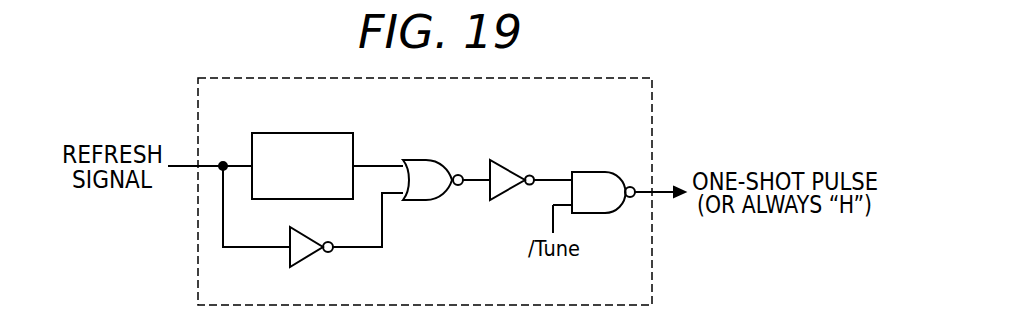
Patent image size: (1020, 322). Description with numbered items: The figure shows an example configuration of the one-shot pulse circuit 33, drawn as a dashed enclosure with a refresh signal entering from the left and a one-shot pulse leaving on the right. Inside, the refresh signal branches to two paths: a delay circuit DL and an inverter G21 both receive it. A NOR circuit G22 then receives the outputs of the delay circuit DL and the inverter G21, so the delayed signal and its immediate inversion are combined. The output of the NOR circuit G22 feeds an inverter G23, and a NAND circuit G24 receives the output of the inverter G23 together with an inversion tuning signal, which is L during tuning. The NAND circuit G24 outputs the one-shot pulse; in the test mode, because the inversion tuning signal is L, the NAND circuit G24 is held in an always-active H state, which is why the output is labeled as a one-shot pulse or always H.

The one-shot pulse circuit 33 is at (607, 78).
The delay circuit DL is at (311, 133).
The inverter G21 is at (306, 258).
The NOR circuit G22 is at (427, 160).
The inverter G23 is at (504, 168).
The NAND circuit G24 is at (593, 172).